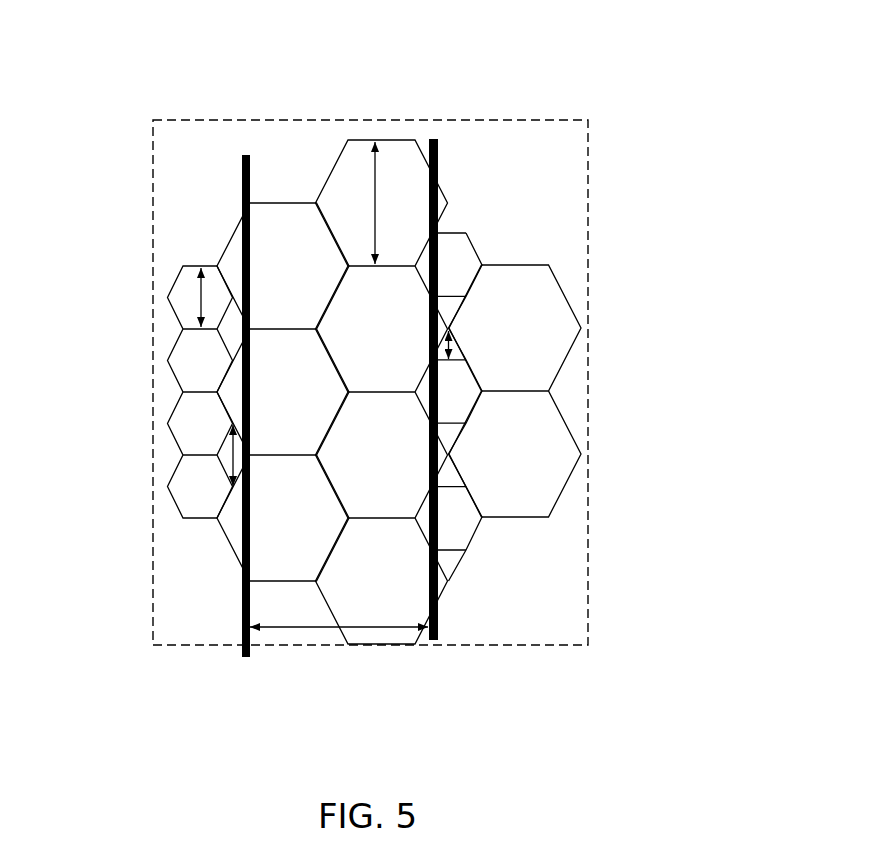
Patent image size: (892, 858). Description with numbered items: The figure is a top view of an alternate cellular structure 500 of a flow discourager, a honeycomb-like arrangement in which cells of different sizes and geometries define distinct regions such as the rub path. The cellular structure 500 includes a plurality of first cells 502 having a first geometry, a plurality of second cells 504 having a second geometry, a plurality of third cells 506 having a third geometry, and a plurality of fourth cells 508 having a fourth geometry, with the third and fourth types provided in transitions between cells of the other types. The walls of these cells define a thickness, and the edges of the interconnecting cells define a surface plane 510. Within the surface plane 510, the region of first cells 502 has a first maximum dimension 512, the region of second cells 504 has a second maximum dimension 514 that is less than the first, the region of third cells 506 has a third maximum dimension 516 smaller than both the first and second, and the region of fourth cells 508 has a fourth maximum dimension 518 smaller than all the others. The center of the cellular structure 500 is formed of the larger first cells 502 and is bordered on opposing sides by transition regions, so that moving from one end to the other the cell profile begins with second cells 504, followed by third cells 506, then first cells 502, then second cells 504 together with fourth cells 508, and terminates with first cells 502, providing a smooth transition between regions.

The cellular structure 500 is at (388, 338).
The first cells 502 is at (350, 153).
The second cells 504 is at (185, 362).
The third cells 506 is at (233, 323).
The fourth cells 508 is at (448, 310).
The surface plane 510 is at (588, 235).
The first maximum dimension 512 is at (377, 170).
The second maximum dimension 514 is at (200, 293).
The third maximum dimension 516 is at (228, 447).
The fourth maximum dimension 518 is at (448, 343).